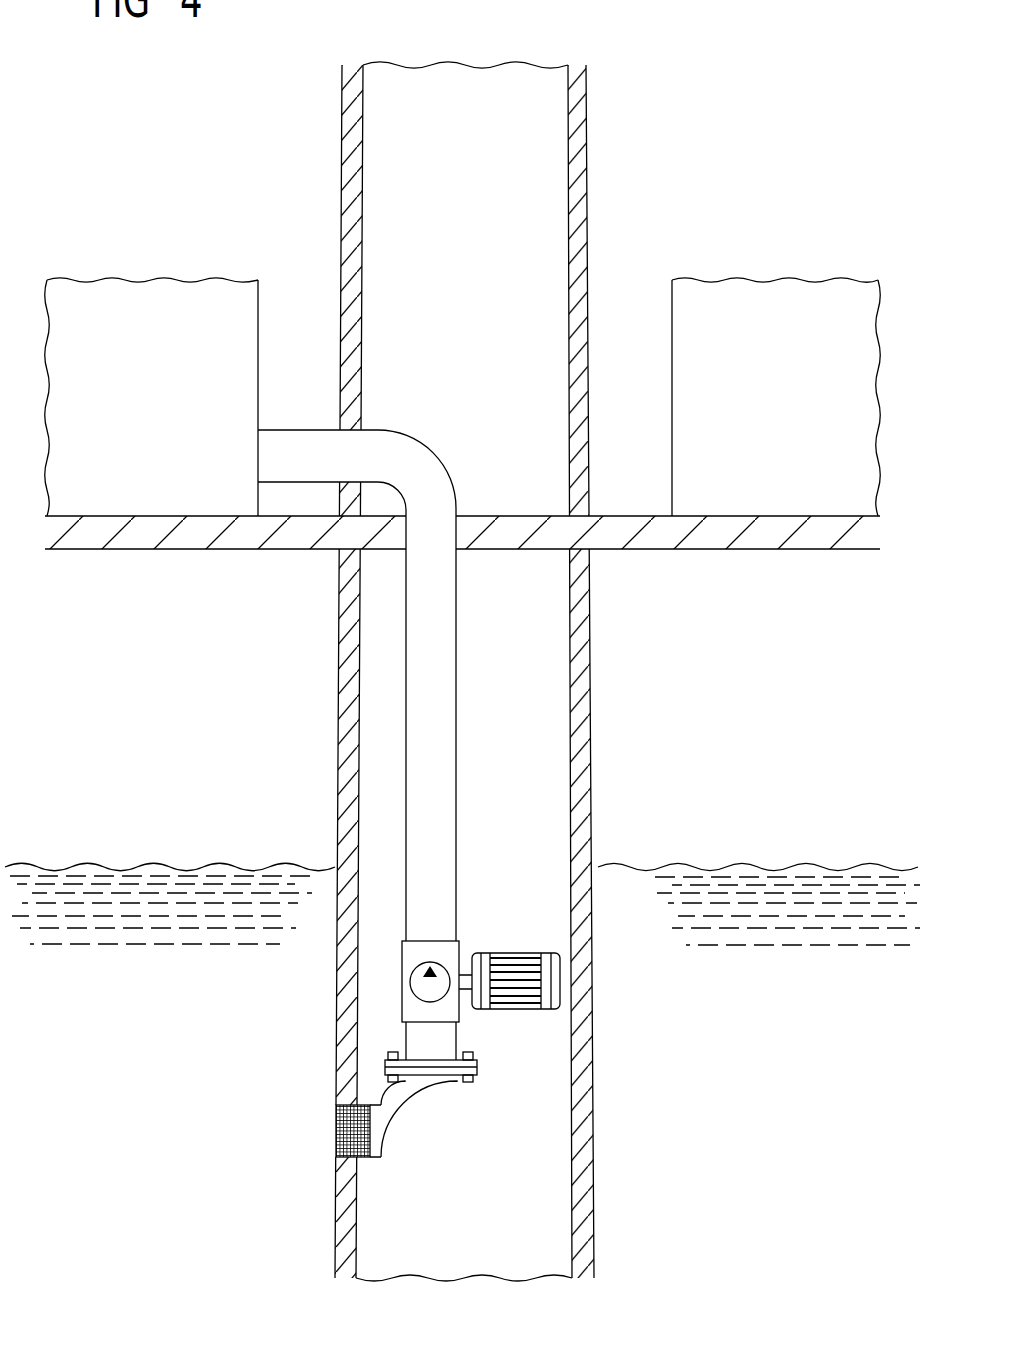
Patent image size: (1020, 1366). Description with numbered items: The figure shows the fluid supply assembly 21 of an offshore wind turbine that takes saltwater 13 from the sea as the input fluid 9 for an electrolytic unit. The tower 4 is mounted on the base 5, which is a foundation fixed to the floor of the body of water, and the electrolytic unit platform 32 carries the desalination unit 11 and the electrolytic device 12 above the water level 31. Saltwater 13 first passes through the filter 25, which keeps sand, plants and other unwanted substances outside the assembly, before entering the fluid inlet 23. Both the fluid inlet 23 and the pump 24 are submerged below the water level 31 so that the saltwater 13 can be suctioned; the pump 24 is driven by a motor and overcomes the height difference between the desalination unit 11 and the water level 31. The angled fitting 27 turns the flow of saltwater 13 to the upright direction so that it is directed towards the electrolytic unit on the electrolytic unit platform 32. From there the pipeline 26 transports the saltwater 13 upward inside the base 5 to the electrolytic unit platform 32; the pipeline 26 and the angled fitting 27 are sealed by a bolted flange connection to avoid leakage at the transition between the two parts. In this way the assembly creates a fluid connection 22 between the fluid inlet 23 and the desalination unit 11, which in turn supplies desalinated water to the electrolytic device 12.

The tower 4 is at (588, 163).
The base 5 is at (594, 664).
The input fluid 9 is at (170, 963).
The desalination unit 11 is at (148, 292).
The electrolytic device 12 is at (786, 292).
The saltwater 13 is at (128, 1062).
The fluid supply assembly 21 is at (150, 700).
The fluid connection 22 is at (318, 792).
The fluid inlet 23 is at (320, 1130).
The pump 24 is at (455, 960).
The filter 25 is at (365, 1145).
The pipeline 26 is at (443, 748).
The angled fitting 27 is at (431, 1115).
The water level 31 is at (818, 868).
The electrolytic unit platform 32 is at (815, 540).